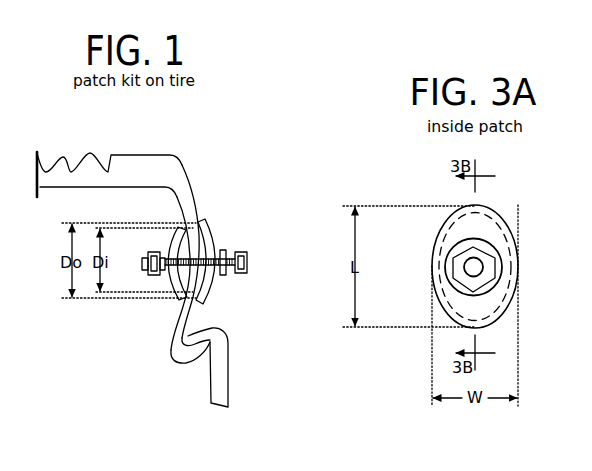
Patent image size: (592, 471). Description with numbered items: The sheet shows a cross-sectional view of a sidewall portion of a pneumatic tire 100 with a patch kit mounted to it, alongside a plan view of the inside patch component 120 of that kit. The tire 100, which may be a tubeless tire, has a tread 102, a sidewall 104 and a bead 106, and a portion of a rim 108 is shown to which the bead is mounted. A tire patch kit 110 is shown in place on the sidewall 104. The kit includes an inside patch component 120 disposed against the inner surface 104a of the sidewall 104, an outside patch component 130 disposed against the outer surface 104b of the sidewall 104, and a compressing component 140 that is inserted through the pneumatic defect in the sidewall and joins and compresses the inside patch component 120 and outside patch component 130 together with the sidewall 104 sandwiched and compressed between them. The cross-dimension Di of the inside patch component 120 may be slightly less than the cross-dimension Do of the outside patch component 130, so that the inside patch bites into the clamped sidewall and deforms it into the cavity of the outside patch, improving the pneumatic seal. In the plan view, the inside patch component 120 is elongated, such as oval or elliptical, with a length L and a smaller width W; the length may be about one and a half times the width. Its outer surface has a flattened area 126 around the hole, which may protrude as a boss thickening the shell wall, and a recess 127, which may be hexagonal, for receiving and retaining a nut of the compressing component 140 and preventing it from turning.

In FIG. 1, the pneumatic tire 100 is at (158, 259).
In FIG. 1, the tread 102 is at (117, 138).
In FIG. 1, the sidewall 104 is at (186, 266).
In FIG. 1, the inner surface 104a is at (172, 333).
In FIG. 1, the outer surface 104b is at (190, 309).
In FIG. 1, the bead 106 is at (182, 365).
In FIG. 1, the rim 108 is at (228, 368).
In FIG. 1, the tire patch kit 110 is at (204, 247).
In FIG. 1, the inside patch component 120 is at (172, 283).
In FIG. 3A, the inside patch component 120 is at (470, 247).
In FIG. 3A, the flattened area 126 is at (492, 238).
In FIG. 3A, the recess 127 is at (483, 262).
In FIG. 1, the outside patch component 130 is at (215, 288).
In FIG. 1, the compressing component 140 is at (229, 245).